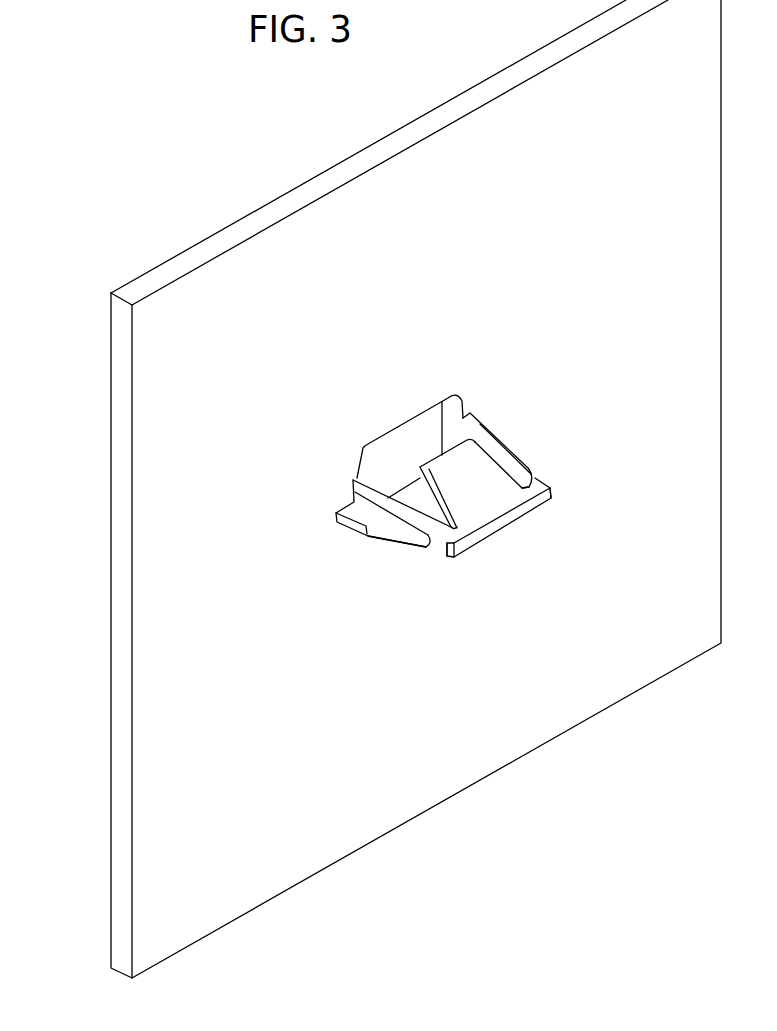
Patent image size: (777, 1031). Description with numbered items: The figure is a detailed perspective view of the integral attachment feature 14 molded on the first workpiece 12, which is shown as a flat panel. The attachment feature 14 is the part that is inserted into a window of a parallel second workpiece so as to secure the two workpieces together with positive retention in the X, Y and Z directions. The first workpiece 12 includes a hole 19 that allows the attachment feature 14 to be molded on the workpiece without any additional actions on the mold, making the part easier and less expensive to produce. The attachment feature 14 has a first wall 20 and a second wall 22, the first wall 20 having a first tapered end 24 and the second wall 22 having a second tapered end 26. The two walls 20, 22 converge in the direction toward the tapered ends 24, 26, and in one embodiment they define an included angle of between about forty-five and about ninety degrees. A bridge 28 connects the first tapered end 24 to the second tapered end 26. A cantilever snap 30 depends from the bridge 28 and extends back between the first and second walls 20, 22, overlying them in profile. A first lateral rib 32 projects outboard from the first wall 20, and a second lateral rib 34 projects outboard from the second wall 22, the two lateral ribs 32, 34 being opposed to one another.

The first workpiece 12 is at (120, 657).
The integral attachment feature 14 is at (452, 533).
The hole 19 is at (390, 457).
The first wall 20 is at (412, 555).
The second wall 22 is at (503, 433).
The first tapered end 24 is at (445, 547).
The second tapered end 26 is at (550, 495).
The bridge 28 is at (512, 524).
The cantilever snap 30 is at (441, 468).
The first lateral rib 32 is at (350, 517).
The second lateral rib 34 is at (532, 451).